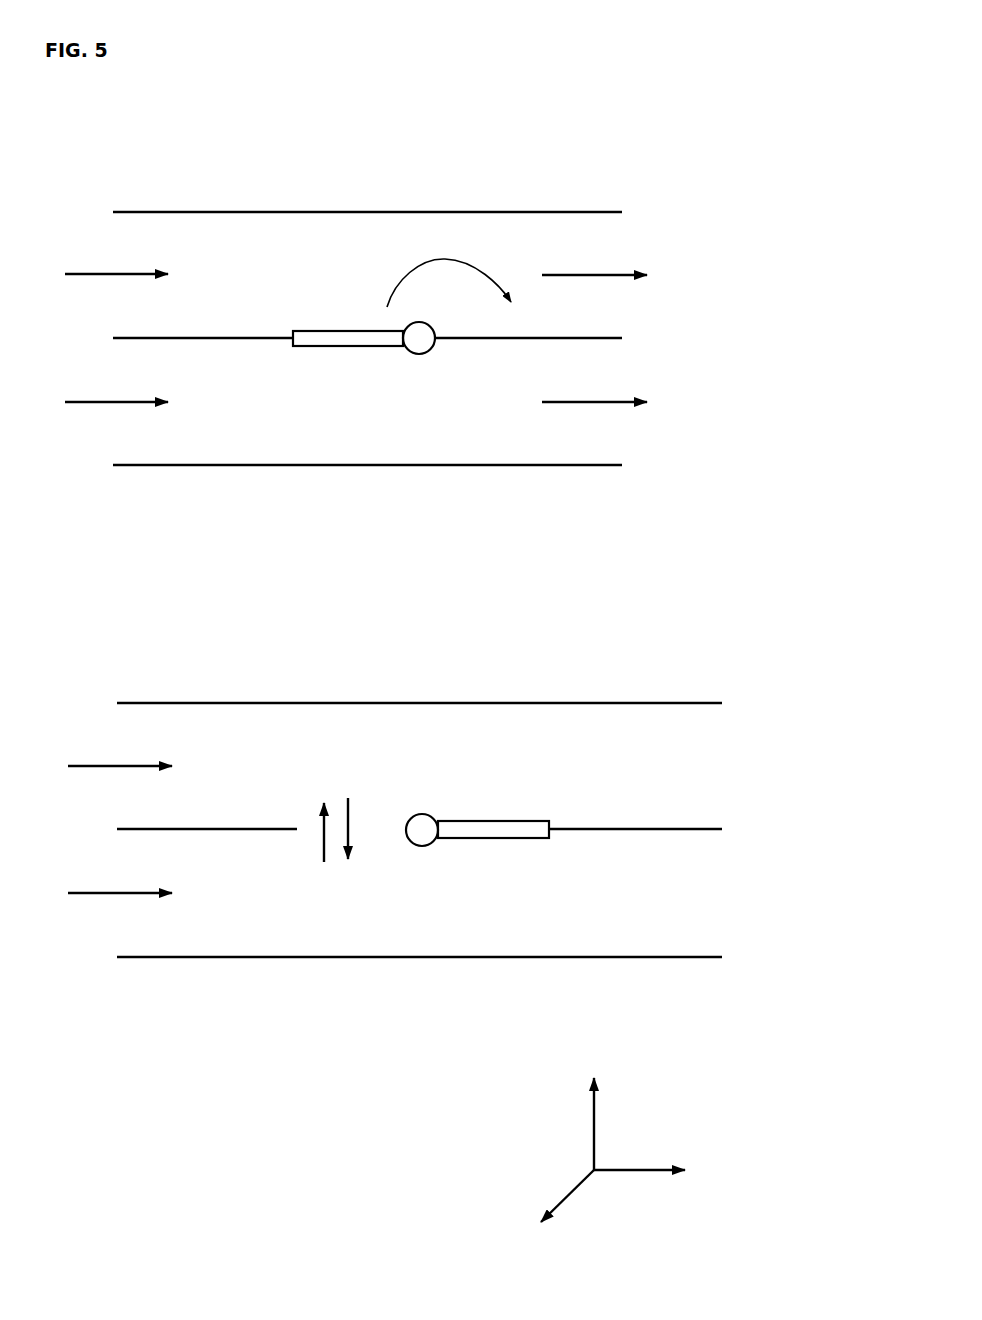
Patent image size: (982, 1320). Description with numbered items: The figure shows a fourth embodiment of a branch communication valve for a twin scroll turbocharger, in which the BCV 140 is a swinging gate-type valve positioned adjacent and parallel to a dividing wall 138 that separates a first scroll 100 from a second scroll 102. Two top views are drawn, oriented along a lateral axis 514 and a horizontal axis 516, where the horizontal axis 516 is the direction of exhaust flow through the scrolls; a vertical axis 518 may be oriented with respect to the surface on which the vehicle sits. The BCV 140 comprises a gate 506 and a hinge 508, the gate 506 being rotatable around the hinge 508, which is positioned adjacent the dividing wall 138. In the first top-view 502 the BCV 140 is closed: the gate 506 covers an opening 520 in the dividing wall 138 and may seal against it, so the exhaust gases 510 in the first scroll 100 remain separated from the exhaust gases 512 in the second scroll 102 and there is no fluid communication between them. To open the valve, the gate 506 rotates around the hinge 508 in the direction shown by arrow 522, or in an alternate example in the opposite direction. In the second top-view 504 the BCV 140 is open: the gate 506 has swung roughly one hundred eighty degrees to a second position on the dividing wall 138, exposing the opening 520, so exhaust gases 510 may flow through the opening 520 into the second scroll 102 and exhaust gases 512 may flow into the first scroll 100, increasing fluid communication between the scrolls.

The first scroll 100 is at (162, 212).
The second scroll 102 is at (162, 465).
The dividing wall 138 is at (562, 338).
The BCV 140 is at (371, 375).
The first top-view 502 is at (606, 160).
The second top-view 504 is at (609, 651).
The gate 506 is at (358, 331).
The hinge 508 is at (415, 323).
The exhaust gases 510 is at (82, 274).
The exhaust gases 512 is at (82, 402).
The lateral axis 514 is at (594, 1107).
The horizontal axis 516 is at (640, 1170).
The vertical axis 518 is at (565, 1198).
The opening 520 is at (379, 843).
The arrow 522 is at (465, 263).